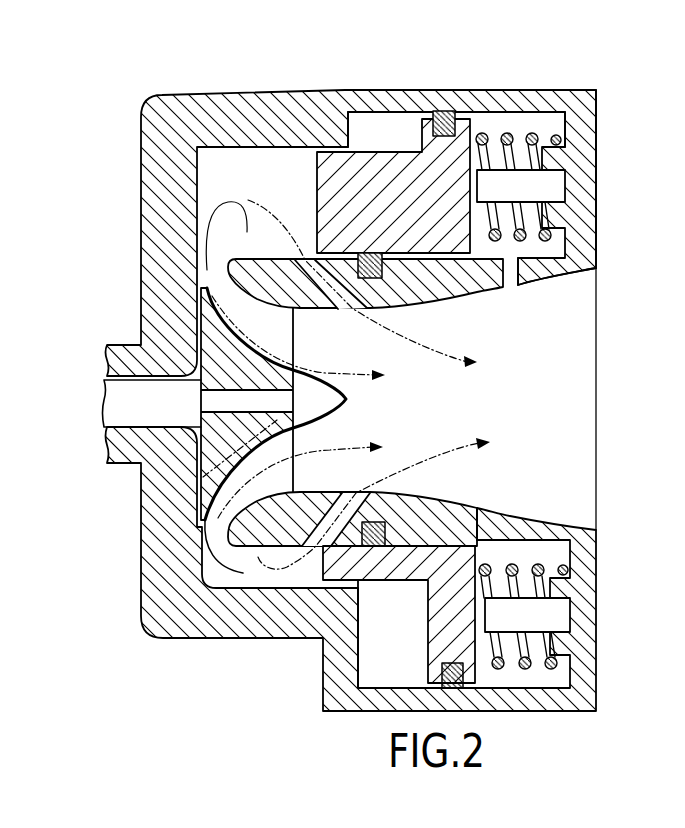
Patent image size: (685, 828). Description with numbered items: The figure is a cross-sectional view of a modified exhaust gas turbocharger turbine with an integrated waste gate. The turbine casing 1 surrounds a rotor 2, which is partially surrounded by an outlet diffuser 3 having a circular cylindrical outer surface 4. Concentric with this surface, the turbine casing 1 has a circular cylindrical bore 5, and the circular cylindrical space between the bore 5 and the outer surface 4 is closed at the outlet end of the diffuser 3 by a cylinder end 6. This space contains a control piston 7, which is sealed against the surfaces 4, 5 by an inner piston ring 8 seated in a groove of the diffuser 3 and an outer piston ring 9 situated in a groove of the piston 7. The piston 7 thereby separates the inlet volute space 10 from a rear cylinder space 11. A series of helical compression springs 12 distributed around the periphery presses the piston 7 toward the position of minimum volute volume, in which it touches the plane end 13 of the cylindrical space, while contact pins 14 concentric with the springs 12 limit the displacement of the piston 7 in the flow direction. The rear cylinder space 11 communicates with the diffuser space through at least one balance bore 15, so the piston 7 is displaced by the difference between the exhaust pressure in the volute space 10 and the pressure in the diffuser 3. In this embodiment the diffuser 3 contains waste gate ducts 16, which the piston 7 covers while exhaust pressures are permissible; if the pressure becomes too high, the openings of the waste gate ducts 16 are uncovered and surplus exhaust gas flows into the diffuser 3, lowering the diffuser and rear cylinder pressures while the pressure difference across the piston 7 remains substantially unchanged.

The turbine casing 1 is at (207, 112).
The rotor 2 is at (267, 422).
The outlet diffuser 3 is at (527, 395).
The circular cylindrical outer surface 4 is at (540, 255).
The circular cylindrical bore 5 is at (538, 113).
The cylinder end 6 is at (577, 183).
The control piston 7 is at (368, 168).
The inner piston ring 8 is at (386, 280).
The outer piston ring 9 is at (445, 116).
The inlet volute space 10 is at (243, 175).
The rear cylinder space 11 is at (487, 123).
The helical compression springs 12 is at (561, 143).
The plane end 13 is at (358, 657).
The contact pins 14 is at (542, 617).
The balance bore 15 is at (520, 282).
The waste gate ducts 16 is at (333, 290).